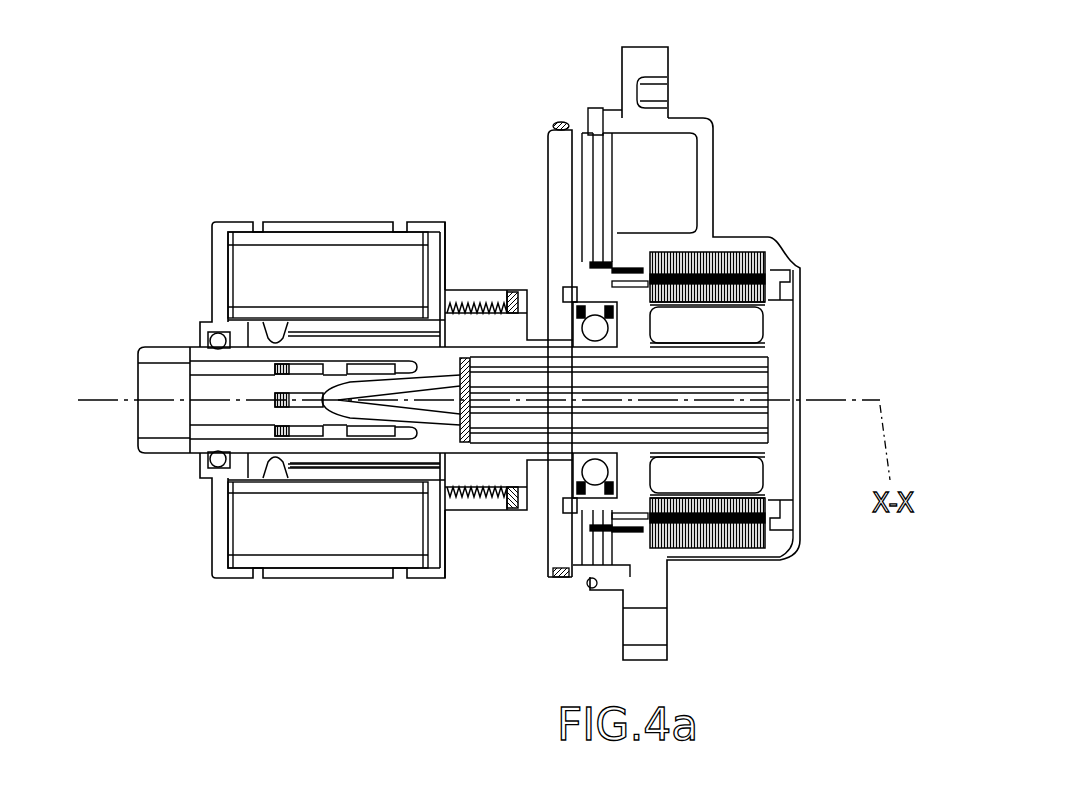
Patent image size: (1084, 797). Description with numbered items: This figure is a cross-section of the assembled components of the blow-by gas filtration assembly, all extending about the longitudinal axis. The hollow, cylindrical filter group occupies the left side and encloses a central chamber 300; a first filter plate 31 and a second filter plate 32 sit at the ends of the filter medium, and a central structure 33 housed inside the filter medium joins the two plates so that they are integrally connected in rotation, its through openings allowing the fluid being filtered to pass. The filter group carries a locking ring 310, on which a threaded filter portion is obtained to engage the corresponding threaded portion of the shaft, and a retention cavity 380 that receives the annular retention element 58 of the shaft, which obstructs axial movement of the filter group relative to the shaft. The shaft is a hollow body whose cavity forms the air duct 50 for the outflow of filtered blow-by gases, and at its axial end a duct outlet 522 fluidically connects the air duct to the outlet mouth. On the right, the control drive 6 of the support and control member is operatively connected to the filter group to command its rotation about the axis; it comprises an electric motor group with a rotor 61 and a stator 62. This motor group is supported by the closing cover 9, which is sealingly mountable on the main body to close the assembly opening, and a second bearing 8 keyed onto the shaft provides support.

The control drive 6 is at (733, 248).
The second bearing 8 is at (565, 286).
The closing cover 9 is at (758, 105).
The first filter plate 31 is at (437, 240).
The second filter plate 32 is at (226, 240).
The central structure 33 is at (310, 322).
The air duct 50 is at (206, 388).
The retention element 58 is at (272, 462).
The rotor 61 is at (750, 325).
The stator 62 is at (776, 282).
The central chamber 300 is at (335, 470).
The locking ring 310 is at (497, 288).
The retention cavity 380 is at (250, 462).
The duct outlet 522 is at (162, 381).